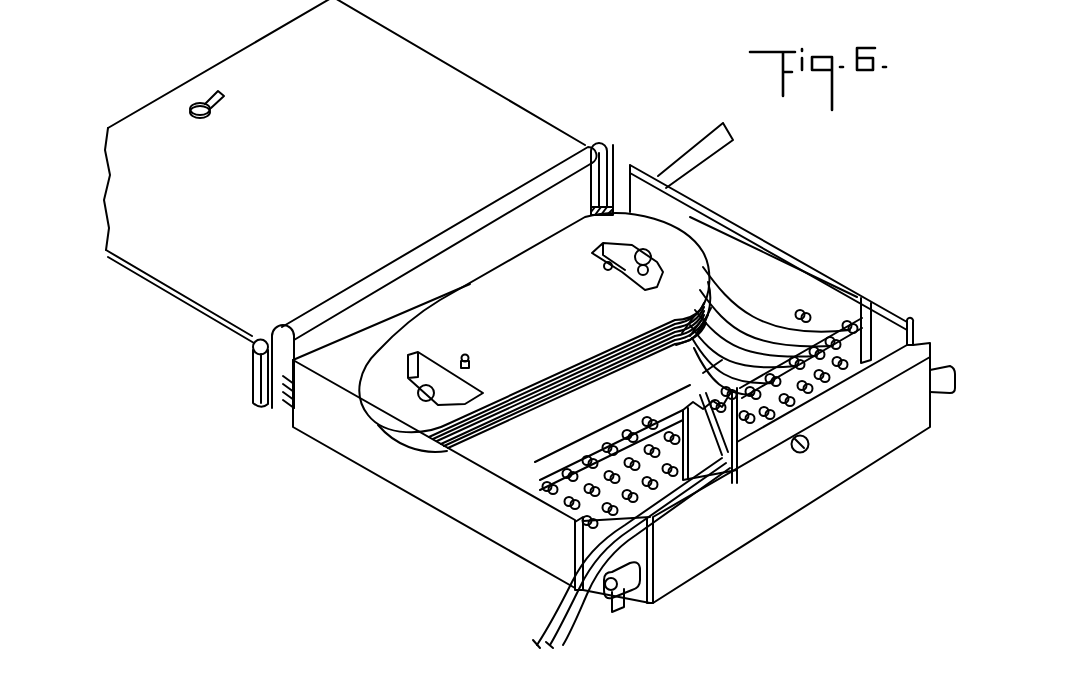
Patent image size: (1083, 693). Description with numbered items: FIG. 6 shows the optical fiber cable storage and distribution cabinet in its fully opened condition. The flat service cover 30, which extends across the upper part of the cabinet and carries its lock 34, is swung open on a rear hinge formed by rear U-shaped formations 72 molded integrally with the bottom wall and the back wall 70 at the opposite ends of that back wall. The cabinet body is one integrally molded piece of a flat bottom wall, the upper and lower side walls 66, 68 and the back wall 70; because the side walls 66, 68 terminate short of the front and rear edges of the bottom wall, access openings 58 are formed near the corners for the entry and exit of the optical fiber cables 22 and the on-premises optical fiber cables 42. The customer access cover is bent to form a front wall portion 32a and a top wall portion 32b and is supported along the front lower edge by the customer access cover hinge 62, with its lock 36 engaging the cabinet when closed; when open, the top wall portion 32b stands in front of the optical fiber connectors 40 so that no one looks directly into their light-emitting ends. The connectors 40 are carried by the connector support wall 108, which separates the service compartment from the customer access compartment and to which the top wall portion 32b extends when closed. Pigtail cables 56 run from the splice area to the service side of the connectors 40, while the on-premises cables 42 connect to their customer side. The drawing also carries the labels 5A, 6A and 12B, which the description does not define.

The service cover 30 is at (490, 100).
The lock 34 is at (214, 111).
The back wall 70 is at (418, 278).
The rear U-shaped formations 72 is at (252, 376).
The access openings 58 is at (622, 152).
The lower side wall 68 is at (398, 468).
The upper side wall 66 is at (750, 236).
The top wall portion 32b is at (740, 524).
The optical fiber cables 22 is at (708, 142).
The storage spool 5A is at (687, 235).
The connector support wall 108 is at (669, 400).
The fiber guide 6A is at (744, 305).
The pigtail cables 56 is at (701, 377).
The divider block 12B is at (727, 458).
The optical fiber connectors 40 is at (833, 318).
The on-premises optical fiber cables 42 is at (560, 614).
The customer access cover hinge 62 is at (602, 598).
The front wall portion 32a is at (636, 612).
The lock 36 is at (803, 452).